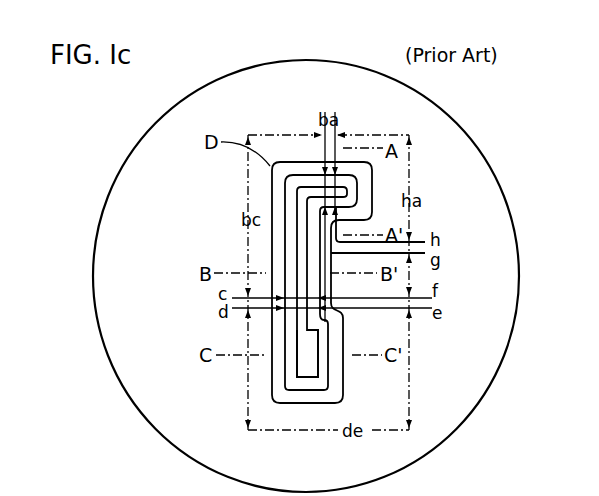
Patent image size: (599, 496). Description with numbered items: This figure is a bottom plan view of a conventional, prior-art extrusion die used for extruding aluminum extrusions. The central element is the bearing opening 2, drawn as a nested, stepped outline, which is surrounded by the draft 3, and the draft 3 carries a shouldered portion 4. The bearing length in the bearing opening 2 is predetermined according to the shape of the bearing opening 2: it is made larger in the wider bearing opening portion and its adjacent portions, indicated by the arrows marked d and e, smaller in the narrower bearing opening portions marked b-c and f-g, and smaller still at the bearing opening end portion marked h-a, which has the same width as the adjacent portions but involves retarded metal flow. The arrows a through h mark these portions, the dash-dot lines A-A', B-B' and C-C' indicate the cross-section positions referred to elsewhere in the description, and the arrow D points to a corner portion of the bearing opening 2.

The bearing opening 2 is at (306, 362).
The draft 3 is at (279, 390).
The shouldered portion of the draft 4 is at (323, 366).